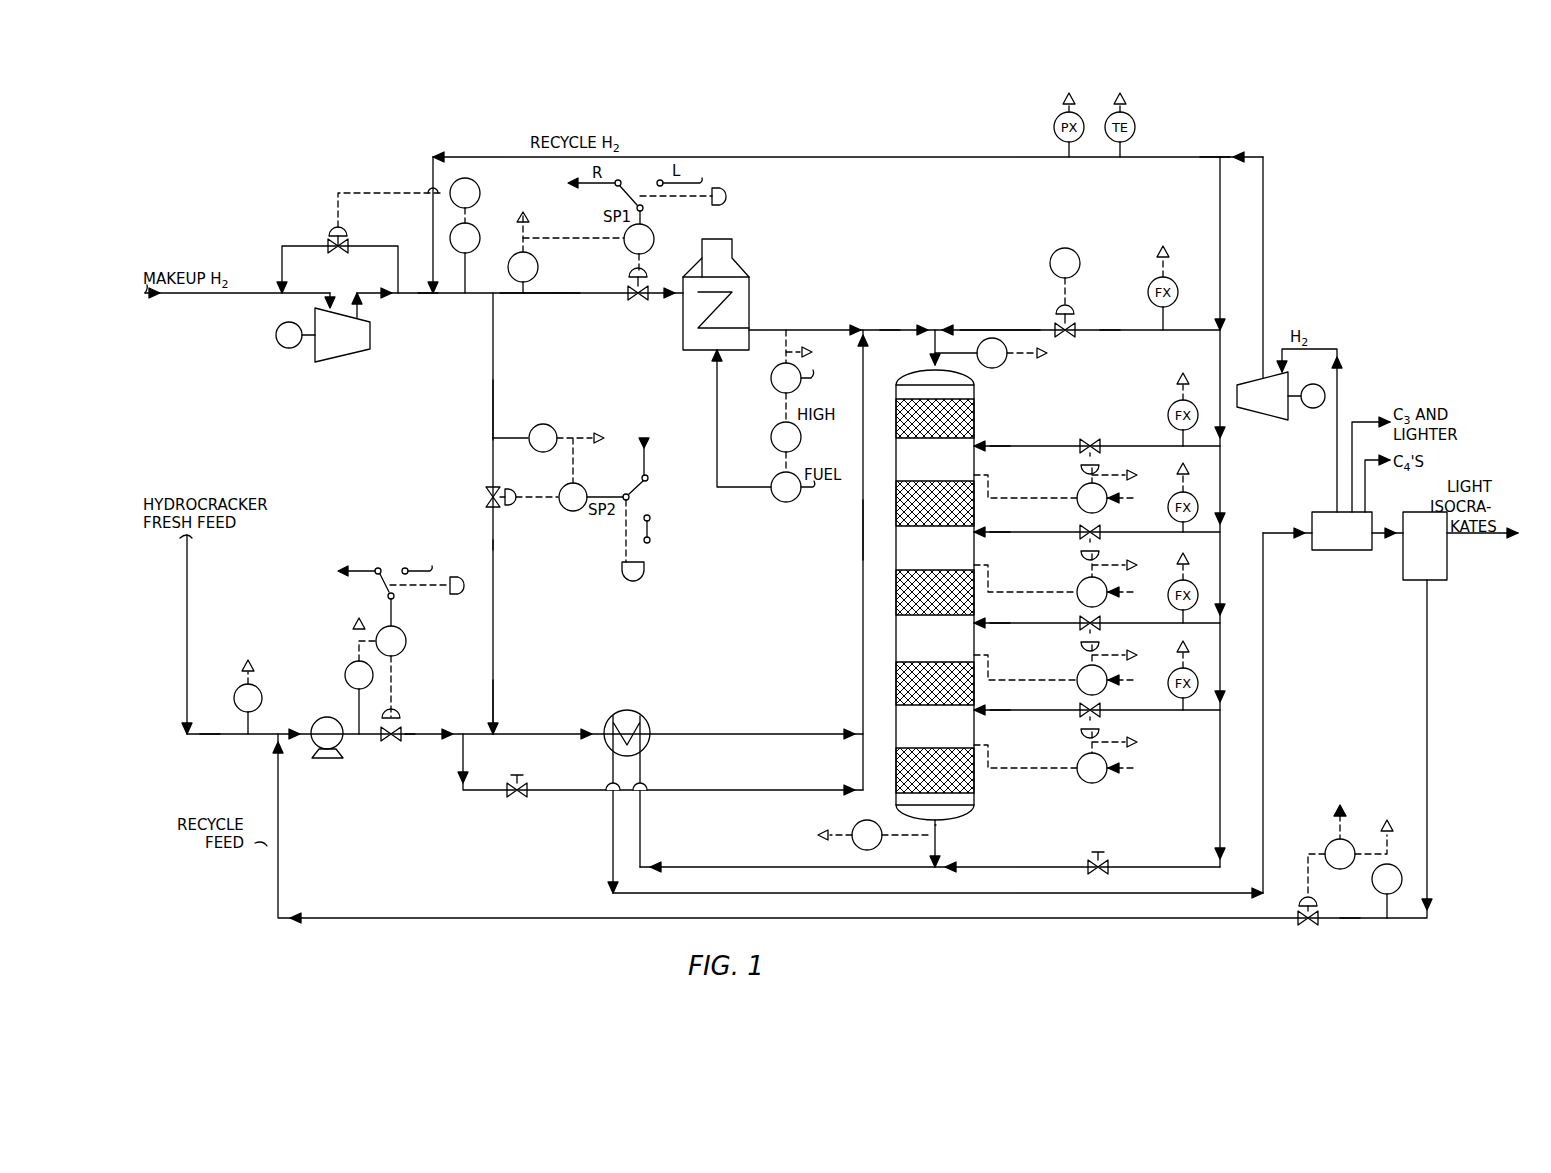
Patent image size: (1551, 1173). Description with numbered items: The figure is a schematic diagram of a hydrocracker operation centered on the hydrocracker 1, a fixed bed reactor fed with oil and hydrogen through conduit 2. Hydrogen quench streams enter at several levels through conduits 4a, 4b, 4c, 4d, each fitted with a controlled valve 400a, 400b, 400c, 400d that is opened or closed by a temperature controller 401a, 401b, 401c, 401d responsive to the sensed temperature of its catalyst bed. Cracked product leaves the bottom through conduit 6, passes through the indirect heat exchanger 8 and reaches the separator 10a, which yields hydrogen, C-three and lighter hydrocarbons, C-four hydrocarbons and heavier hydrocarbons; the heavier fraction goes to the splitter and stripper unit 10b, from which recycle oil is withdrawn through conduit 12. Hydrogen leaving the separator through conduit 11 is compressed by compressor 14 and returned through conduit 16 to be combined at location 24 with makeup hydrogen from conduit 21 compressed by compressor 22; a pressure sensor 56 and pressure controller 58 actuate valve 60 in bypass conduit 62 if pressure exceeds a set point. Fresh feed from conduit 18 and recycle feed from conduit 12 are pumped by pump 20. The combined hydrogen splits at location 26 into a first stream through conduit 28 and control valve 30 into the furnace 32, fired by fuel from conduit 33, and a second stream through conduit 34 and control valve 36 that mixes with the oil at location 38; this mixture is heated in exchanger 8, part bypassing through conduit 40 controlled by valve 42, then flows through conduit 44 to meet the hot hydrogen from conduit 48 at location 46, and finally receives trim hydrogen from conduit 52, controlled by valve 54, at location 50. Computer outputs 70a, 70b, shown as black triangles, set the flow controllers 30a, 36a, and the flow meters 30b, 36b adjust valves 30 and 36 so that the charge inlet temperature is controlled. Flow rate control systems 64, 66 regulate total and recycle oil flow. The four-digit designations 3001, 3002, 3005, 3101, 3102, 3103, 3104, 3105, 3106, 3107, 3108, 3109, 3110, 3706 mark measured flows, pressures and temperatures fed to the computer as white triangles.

The hydrocracker 1 is at (895, 610).
The conduit 2 is at (940, 340).
The quench conduit 4a is at (1035, 445).
The quench conduit 4b is at (1035, 531).
The quench conduit 4c is at (1035, 622).
The quench conduit 4d is at (1035, 709).
The conduit 6 is at (924, 842).
The indirect heat exchanger 8 is at (650, 748).
The separator 10a is at (1338, 550).
The splitter and stripper unit 10b is at (1407, 586).
The conduit 11 is at (1340, 380).
The conduit 12 is at (1427, 739).
The compressor 14 is at (1263, 418).
The conduit 16 is at (935, 155).
The conduit 18 is at (268, 714).
The pump 20 is at (316, 716).
The conduit 21 is at (191, 295).
The compressor 22 is at (342, 356).
The location 24 is at (520, 306).
The location 26 is at (491, 292).
The conduit 28 is at (529, 294).
The control valve 30 is at (640, 298).
The flow controller 30a is at (655, 236).
The flow meter 30b is at (540, 265).
The furnace 32 is at (740, 264).
The conduit 33 is at (717, 404).
The conduit 34 is at (492, 410).
The control valve 36 is at (488, 504).
The flow controller 36a is at (584, 484).
The flow meter 36b is at (550, 426).
The location 38 is at (493, 734).
The bypass conduit 40 is at (485, 795).
The valve 42 is at (526, 784).
The conduit 44 is at (860, 520).
The location 46 is at (863, 330).
The conduit 48 is at (823, 328).
The location 50 is at (935, 330).
The conduit 52 is at (990, 330).
The valve 54 is at (1076, 326).
The pressure sensor 56 is at (482, 234).
The pressure controller 58 is at (482, 194).
The valve 60 is at (349, 232).
The bypass conduit 62 is at (360, 250).
The flow rate control system 64 is at (404, 660).
The flow rate control system 66 is at (1382, 845).
The computer output 70a is at (566, 186).
The computer output 70b is at (654, 450).
The controlled valve 400a is at (1094, 444).
The controlled valve 400b is at (1104, 532).
The controlled valve 400c is at (1104, 621).
The controlled valve 400d is at (1104, 709).
The temperature controller 401a is at (1071, 496).
The temperature controller 401b is at (1071, 590).
The temperature controller 401c is at (1071, 677).
The temperature controller 401d is at (1071, 765).
The hydrocracker fresh feed flow rate signal 3001 is at (258, 734).
The hydrogen pressure signal 3002 is at (485, 293).
The trim hydrogen pressure and temperature signal 3005 is at (1197, 157).
The hydrocracker feed inlet temperature signal 3101 is at (920, 330).
The quench hydrogen flow rate signal 3102 is at (1062, 446).
The quench hydrogen flow rate signal 3103 is at (1062, 532).
The quench hydrogen flow rate signal 3104 is at (1060, 623).
The quench hydrogen flow rate signal 3105 is at (1060, 710).
The total oil flow rate signal 3106 is at (355, 734).
The furnace hydrogen flow rate signal 3107 is at (598, 293).
The heat exchanger hydrogen flow rate signal 3108 is at (495, 545).
The outlet temperature signal 3109 is at (938, 855).
The trim hydrogen flow rate signal 3110 is at (1103, 330).
The recycle feed flow rate signal 3706 is at (1345, 920).